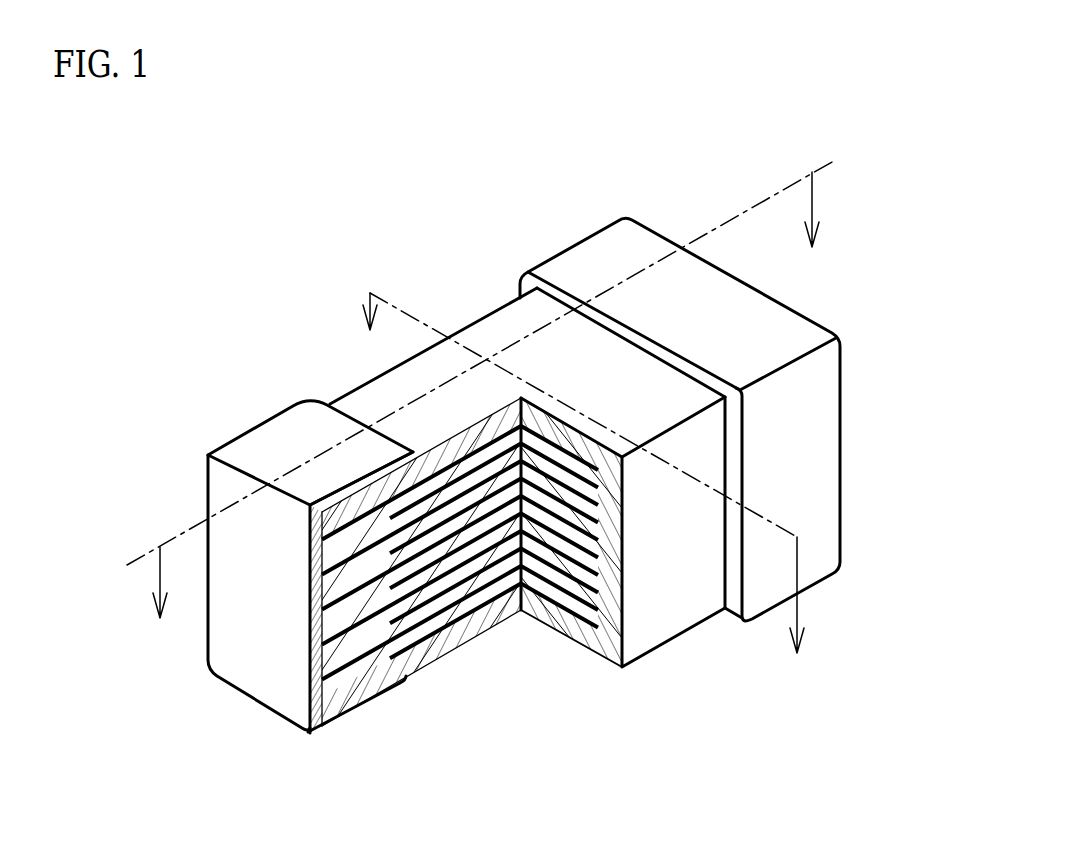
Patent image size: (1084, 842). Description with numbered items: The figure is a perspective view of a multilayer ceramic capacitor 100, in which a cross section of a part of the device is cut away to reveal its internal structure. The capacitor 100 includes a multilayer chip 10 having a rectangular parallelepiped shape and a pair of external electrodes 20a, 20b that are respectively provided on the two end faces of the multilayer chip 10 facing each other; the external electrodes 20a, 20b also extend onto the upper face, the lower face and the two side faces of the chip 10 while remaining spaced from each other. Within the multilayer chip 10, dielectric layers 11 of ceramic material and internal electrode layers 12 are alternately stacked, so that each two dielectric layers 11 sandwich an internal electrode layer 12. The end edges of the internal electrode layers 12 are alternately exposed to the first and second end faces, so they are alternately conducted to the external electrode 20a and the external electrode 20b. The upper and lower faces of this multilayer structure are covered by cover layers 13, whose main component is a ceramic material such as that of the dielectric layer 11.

The multilayer ceramic capacitor 100 is at (945, 147).
The multilayer chip 10 is at (489, 502).
The dielectric layer 11 is at (447, 597).
The internal electrode layer 12 is at (415, 628).
The cover layer 13 is at (487, 337).
The external electrode 20a is at (237, 431).
The external electrode 20b is at (578, 260).